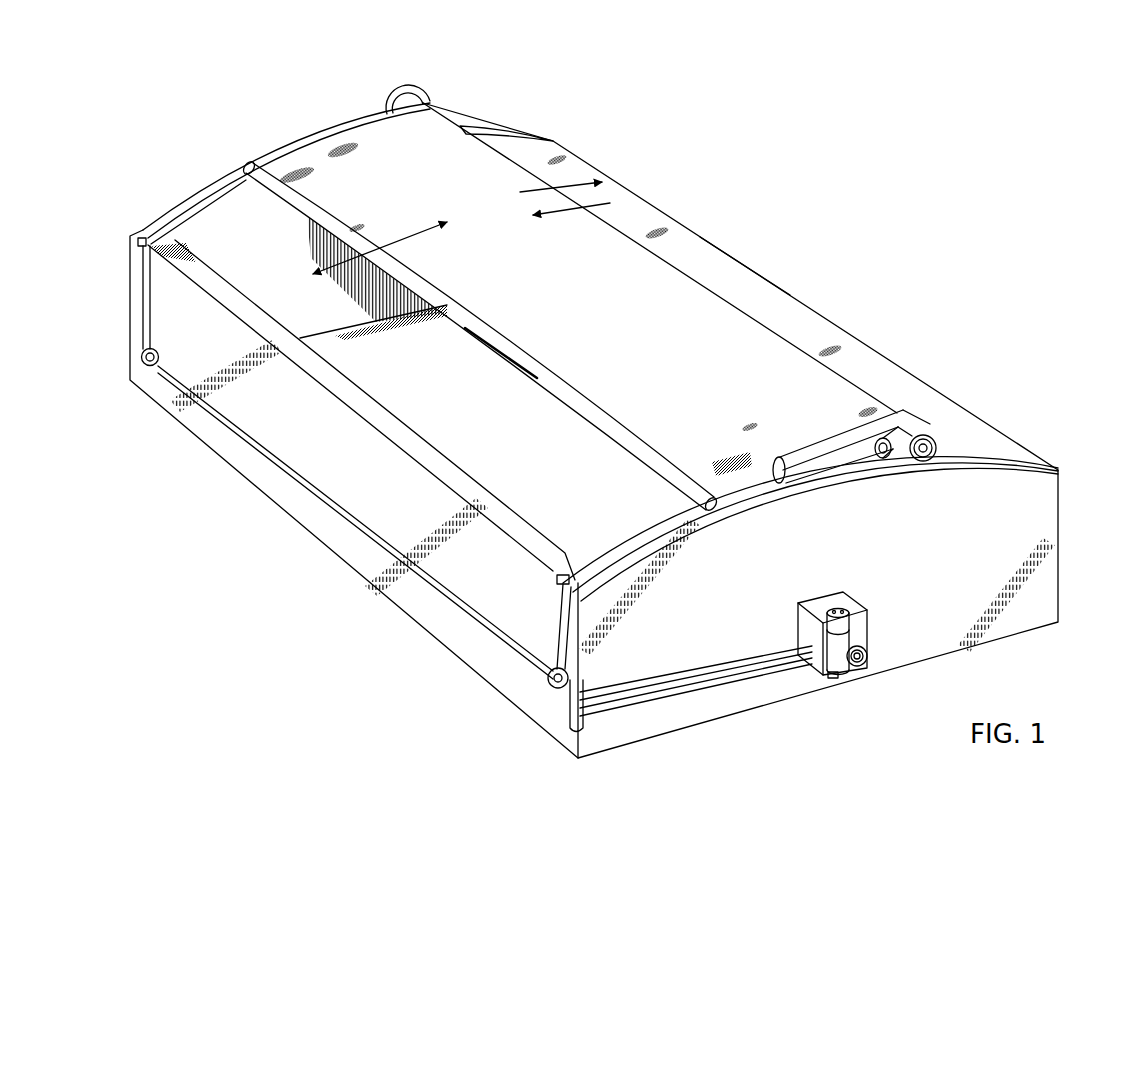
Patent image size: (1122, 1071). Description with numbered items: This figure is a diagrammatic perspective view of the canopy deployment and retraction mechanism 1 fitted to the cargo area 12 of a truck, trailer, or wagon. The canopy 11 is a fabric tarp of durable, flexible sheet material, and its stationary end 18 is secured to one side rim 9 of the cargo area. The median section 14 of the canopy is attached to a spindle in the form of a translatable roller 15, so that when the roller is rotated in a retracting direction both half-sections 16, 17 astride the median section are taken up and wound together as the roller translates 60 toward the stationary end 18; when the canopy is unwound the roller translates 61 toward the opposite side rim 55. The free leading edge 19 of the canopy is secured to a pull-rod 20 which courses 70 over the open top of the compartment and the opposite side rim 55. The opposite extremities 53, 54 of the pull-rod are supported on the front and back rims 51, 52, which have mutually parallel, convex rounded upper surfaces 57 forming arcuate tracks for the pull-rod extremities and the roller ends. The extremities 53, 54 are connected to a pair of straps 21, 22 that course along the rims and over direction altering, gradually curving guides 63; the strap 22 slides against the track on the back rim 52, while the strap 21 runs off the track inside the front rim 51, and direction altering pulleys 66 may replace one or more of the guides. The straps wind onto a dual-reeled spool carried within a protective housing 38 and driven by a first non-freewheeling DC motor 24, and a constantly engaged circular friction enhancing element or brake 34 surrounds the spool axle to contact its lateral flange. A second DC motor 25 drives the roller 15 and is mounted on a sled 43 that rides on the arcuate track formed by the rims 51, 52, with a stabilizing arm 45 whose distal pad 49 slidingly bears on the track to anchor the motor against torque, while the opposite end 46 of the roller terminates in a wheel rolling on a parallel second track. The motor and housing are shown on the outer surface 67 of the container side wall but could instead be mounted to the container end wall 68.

The canopy deployment and retraction mechanism 1 is at (120, 116).
The side rim 9 is at (826, 318).
The canopy 11 is at (560, 318).
The cargo area 12 is at (428, 383).
The median section 14 is at (657, 273).
The translatable roller 15 is at (432, 104).
The half-section 16 is at (651, 337).
The half-section 17 is at (769, 322).
The stationary end 18 is at (757, 273).
The free leading edge 19 is at (600, 410).
The pull-rod 20 is at (577, 403).
The strap 21 is at (212, 206).
The strap 22 is at (662, 519).
The first non-freewheeling DC motor 24 is at (834, 680).
The second DC motor 25 is at (936, 440).
The friction enhancing element or brake 34 is at (717, 487).
The protective housing 38 is at (843, 593).
The sled 43 is at (910, 460).
The stabilizing arm 45 is at (827, 453).
The opposite end of the roller 46 is at (412, 92).
The distal pad 49 is at (785, 485).
The front rim 51 is at (205, 192).
The back rim 52 is at (628, 527).
The pull-rod extremity 53 is at (246, 160).
The pull-rod extremity 54 is at (722, 509).
The opposite side rim 55 is at (370, 427).
The convex rounded upper surfaces 57 is at (594, 538).
The retracting translation direction 60 is at (582, 177).
The deploying translation direction 61 is at (563, 213).
The guides 63 is at (142, 237).
The direction altering pulleys 66 is at (142, 357).
The outer surface 67 is at (317, 536).
The container end wall 68 is at (897, 643).
The pull-rod travel direction 70 is at (412, 232).